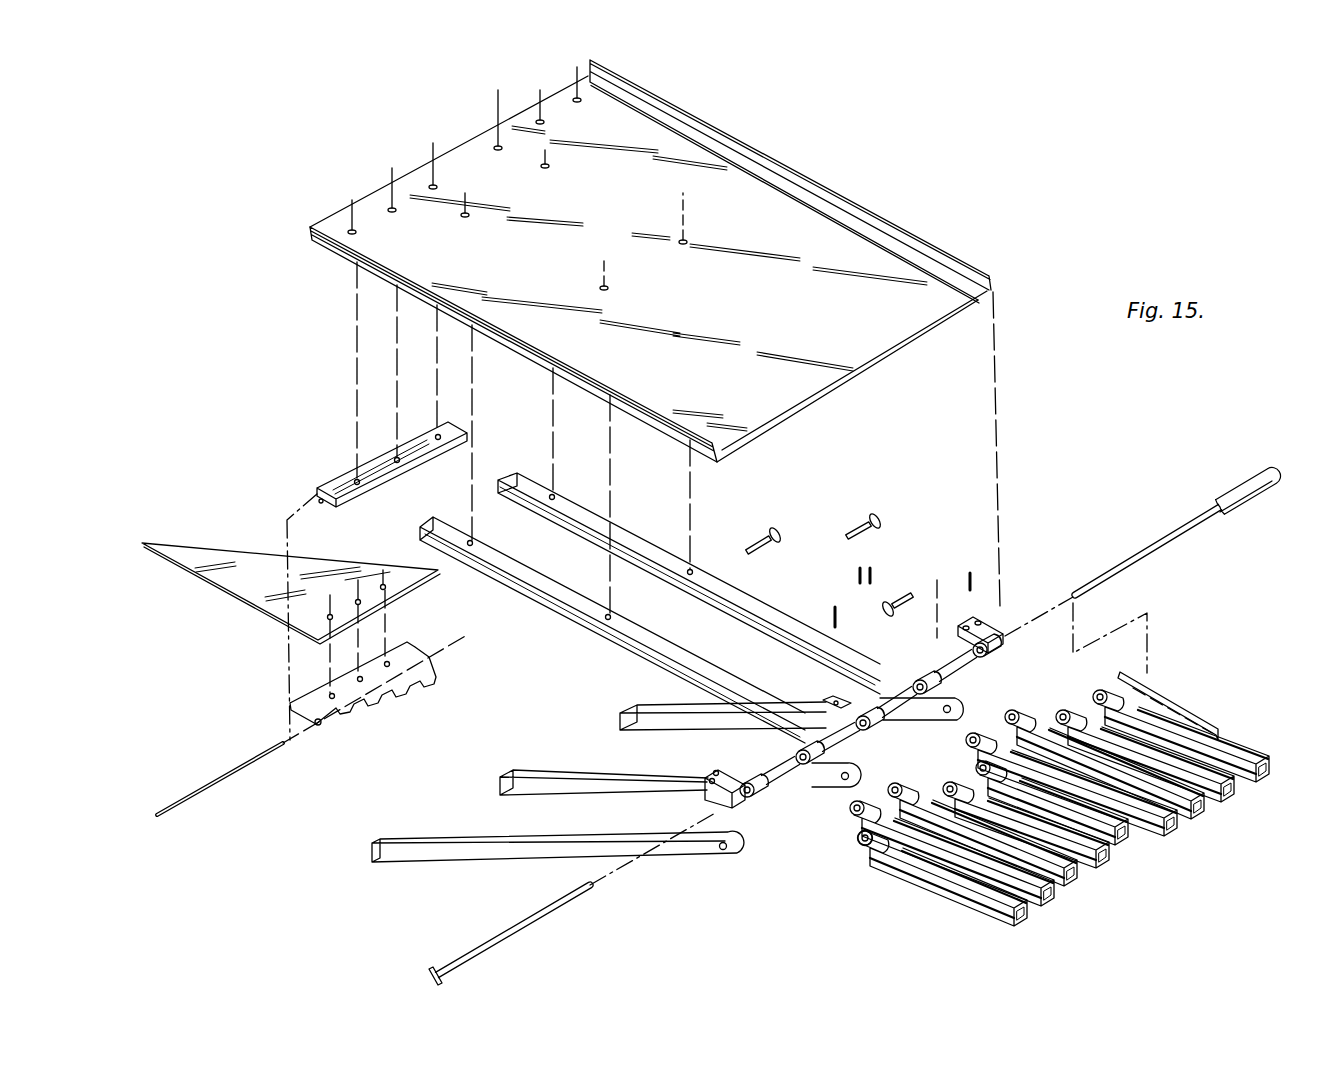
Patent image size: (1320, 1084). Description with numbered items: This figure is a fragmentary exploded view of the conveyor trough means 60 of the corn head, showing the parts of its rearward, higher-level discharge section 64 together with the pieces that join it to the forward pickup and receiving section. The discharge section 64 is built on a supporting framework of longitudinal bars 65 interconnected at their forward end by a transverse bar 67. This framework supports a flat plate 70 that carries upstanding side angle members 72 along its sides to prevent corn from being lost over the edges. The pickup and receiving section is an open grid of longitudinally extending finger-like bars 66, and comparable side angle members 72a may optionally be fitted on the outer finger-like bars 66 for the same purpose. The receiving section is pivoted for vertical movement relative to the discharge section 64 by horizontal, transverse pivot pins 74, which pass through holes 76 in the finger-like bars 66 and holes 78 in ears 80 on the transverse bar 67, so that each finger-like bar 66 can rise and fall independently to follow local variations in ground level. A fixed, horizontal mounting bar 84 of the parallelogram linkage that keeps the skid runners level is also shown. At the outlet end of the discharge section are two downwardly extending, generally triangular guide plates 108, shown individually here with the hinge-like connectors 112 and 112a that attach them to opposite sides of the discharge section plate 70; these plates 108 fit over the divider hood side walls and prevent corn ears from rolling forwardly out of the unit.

The conveyor trough means 60 is at (1030, 378).
The discharge section 64 is at (930, 240).
The longitudinal bars 65 is at (627, 537).
The finger-like bars 66 is at (1047, 906).
The transverse bar 67 is at (932, 656).
The flat plate 70 is at (604, 283).
The side angle members 72 is at (777, 183).
The side angle members 72a is at (1196, 703).
The pivot pins 74 is at (1167, 538).
The holes 76 is at (862, 845).
The holes 78 is at (752, 796).
The ears 80 is at (832, 762).
The mounting bar 84 is at (628, 843).
The triangular plates 108 is at (232, 560).
The hinge-like connector 112 is at (300, 705).
The hinge-like connector 112a is at (378, 462).